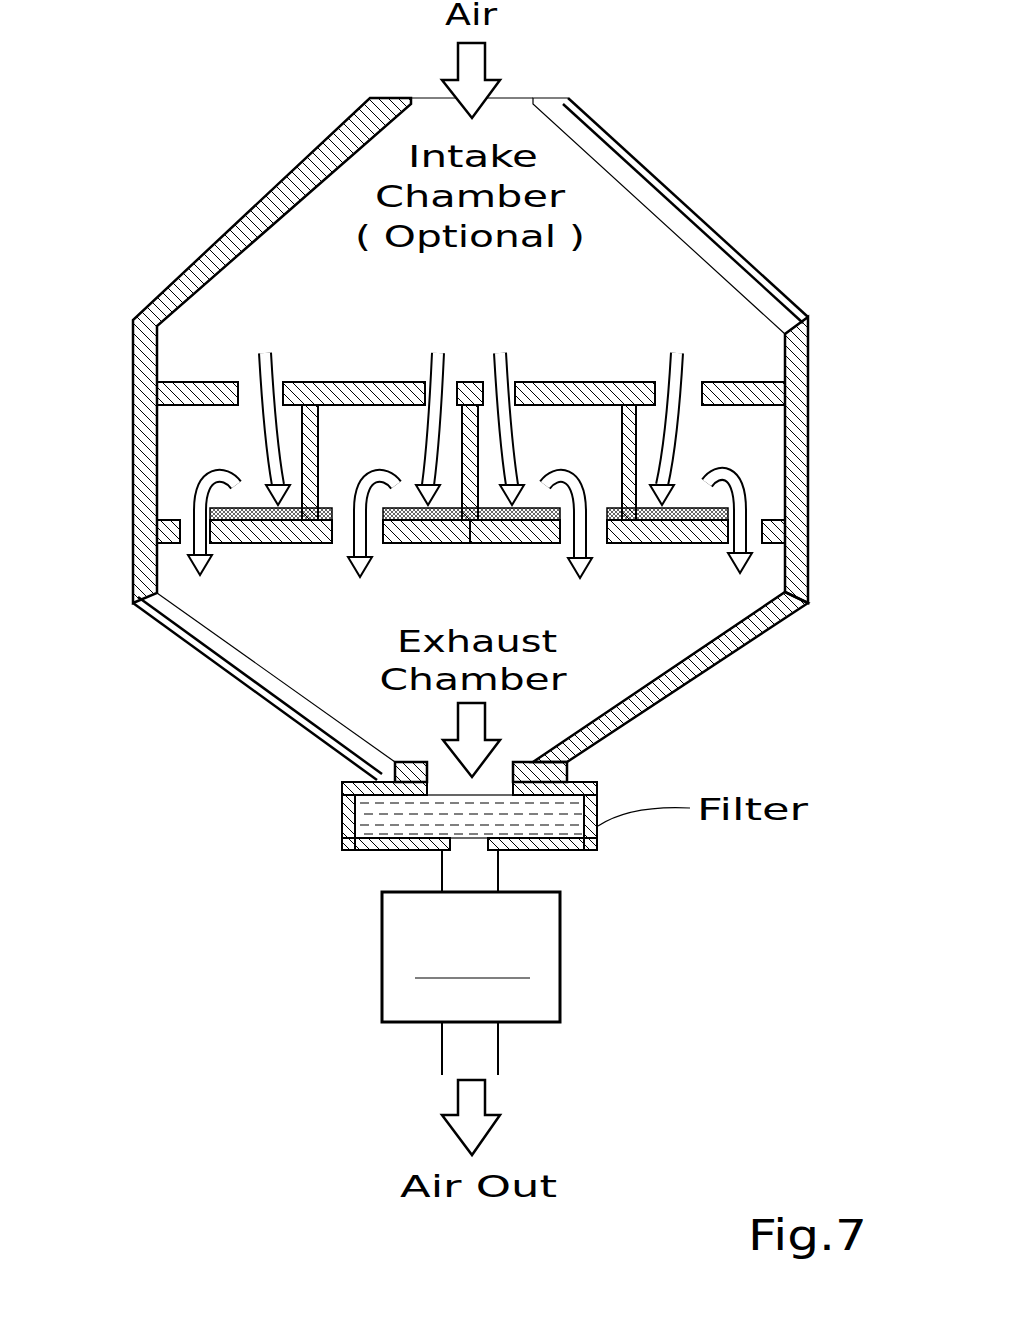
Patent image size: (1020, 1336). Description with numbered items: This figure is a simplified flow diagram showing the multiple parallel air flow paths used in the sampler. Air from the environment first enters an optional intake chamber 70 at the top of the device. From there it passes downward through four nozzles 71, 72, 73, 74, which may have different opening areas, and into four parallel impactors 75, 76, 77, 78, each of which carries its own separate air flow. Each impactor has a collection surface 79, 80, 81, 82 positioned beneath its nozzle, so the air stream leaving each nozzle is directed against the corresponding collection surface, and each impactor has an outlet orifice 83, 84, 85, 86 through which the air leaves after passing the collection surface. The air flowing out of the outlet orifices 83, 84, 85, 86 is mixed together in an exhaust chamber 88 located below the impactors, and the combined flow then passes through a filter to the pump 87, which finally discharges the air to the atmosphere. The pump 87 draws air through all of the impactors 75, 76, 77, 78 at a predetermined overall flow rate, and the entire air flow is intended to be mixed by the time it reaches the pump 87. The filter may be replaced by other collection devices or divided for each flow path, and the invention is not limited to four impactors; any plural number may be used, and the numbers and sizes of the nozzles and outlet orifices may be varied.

The intake chamber 70 is at (597, 195).
The nozzle 71 is at (250, 390).
The nozzle 72 is at (432, 392).
The nozzle 73 is at (508, 388).
The nozzle 74 is at (690, 390).
The impactor 75 is at (173, 445).
The impactor 76 is at (333, 445).
The impactor 77 is at (605, 445).
The impactor 78 is at (720, 445).
The collection surface 79 is at (253, 523).
The collection surface 80 is at (437, 523).
The collection surface 81 is at (503, 523).
The collection surface 82 is at (675, 523).
The outlet orifice 83 is at (187, 548).
The outlet orifice 84 is at (352, 548).
The outlet orifice 85 is at (593, 545).
The outlet orifice 86 is at (755, 547).
The pump 87 is at (548, 940).
The exhaust chamber 88 is at (327, 680).